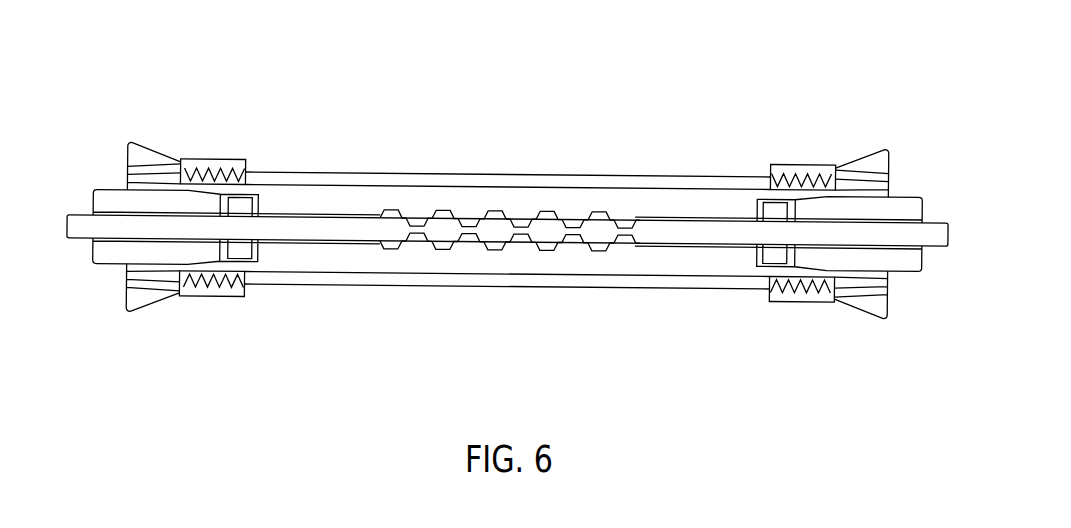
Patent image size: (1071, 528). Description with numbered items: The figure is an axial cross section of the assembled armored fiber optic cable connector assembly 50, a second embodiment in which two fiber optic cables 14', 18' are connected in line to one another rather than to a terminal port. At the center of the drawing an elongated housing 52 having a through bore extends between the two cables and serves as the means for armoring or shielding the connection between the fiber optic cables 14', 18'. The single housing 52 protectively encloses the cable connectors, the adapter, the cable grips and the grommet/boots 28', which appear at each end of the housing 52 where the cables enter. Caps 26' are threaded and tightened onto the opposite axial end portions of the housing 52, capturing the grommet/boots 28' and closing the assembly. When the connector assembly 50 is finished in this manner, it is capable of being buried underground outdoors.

The armored fiber optic cable connector assembly 50 is at (518, 221).
The elongated housing 52 is at (500, 294).
The cap 26' is at (530, 138).
The grommet/boot 28' is at (496, 311).
The fiber optic cable 18' is at (217, 252).
The fiber optic cable 14' is at (807, 250).